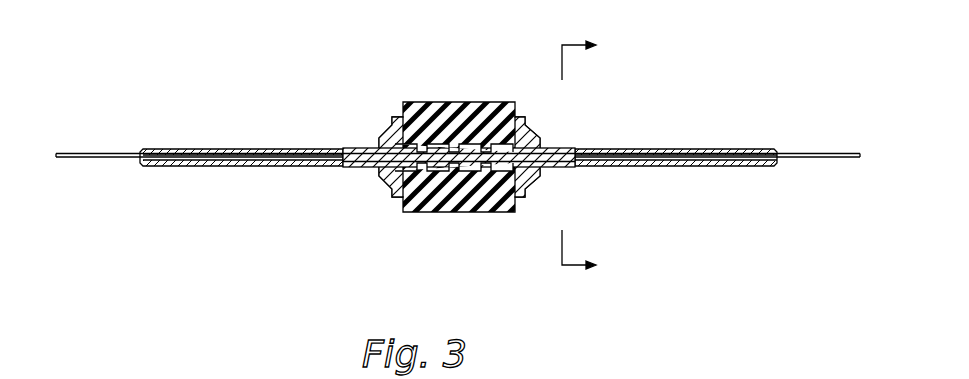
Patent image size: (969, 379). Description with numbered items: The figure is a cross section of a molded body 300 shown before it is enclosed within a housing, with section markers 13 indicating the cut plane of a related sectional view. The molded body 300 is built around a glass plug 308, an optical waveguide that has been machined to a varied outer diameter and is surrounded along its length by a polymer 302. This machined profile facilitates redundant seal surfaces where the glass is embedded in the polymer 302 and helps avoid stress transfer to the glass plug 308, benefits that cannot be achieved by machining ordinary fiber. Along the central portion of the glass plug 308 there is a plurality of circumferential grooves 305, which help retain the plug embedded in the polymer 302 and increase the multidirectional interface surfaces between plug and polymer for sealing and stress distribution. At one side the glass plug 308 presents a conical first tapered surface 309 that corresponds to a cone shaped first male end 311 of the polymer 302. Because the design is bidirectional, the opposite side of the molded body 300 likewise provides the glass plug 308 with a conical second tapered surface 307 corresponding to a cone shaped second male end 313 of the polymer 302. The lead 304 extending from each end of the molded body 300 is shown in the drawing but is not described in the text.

The molded body 300 is at (192, 39).
The polymer 302 is at (482, 212).
The lead wire 304 is at (222, 182).
The circumferential grooves 305 is at (424, 168).
The second tapered surface 307 is at (386, 172).
The glass plug 308 is at (441, 143).
The first tapered surface 309 is at (530, 172).
The first male end 311 is at (530, 143).
The second male end 313 is at (385, 142).
The section line 13- 13 is at (593, 158).